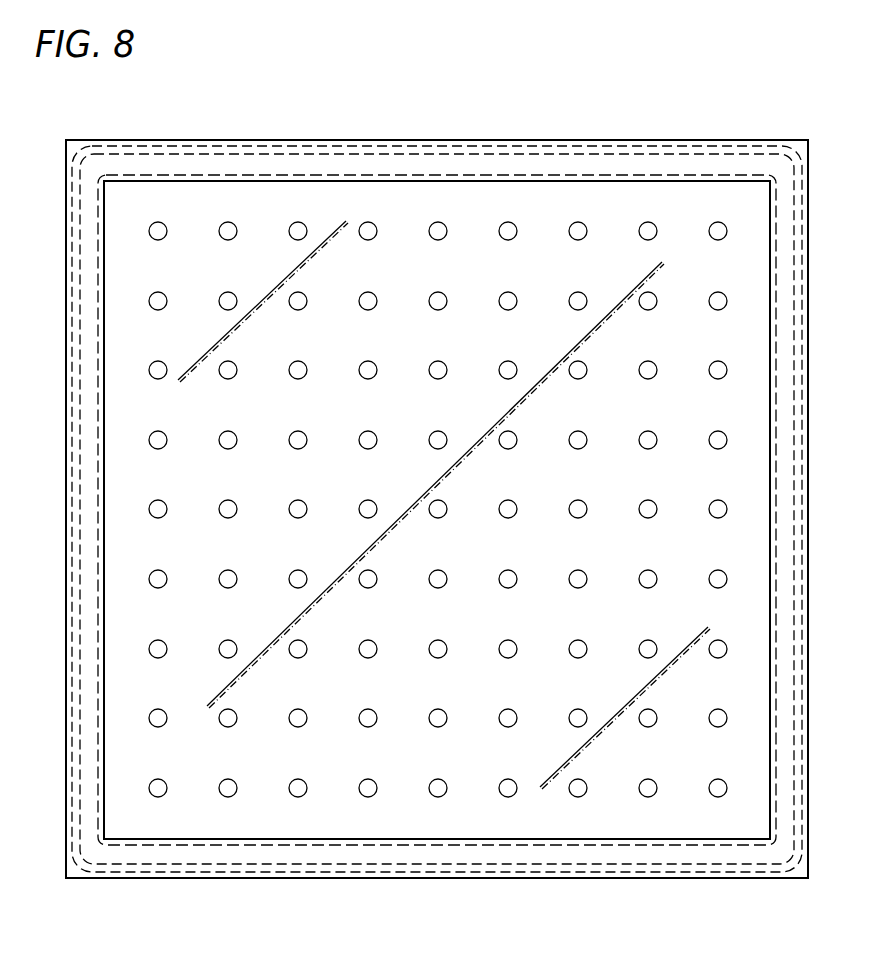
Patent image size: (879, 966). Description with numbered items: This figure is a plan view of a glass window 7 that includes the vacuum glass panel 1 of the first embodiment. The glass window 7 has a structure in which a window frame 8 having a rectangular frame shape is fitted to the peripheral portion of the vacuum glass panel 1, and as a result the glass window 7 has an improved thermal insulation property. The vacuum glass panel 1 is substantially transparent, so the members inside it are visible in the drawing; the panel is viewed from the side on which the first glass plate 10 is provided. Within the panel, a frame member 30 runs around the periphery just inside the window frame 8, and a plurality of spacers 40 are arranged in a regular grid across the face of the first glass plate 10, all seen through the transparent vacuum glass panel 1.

The vacuum glass panel 1 is at (618, 206).
The glass window 7 is at (769, 137).
The window frame 8 is at (280, 162).
The first glass plate 10 is at (404, 212).
The frame member 30 is at (480, 858).
The spacers 40 is at (722, 293).